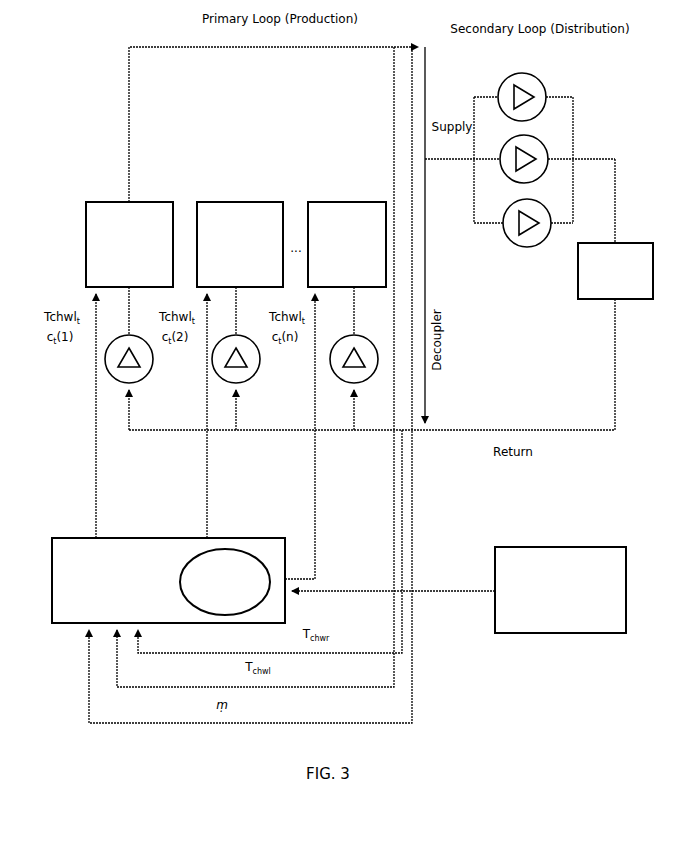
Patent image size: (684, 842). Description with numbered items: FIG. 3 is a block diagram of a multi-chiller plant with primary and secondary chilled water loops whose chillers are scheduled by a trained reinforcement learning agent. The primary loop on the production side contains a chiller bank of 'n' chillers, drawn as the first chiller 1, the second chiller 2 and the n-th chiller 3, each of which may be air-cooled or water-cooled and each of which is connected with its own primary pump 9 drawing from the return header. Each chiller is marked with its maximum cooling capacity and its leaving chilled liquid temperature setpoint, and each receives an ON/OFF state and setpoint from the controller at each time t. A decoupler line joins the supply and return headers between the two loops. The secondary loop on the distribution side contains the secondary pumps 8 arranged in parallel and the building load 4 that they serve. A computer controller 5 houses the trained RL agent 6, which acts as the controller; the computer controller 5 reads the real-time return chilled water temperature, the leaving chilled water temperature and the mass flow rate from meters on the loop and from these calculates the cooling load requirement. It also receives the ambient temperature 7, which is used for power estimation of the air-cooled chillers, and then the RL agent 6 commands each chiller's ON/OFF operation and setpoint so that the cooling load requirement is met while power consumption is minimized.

The chiller 1 is at (129, 244).
The chiller 2 is at (240, 244).
The chiller n 3 is at (347, 244).
The building load 4 is at (615, 271).
The computer controller 5 is at (168, 580).
The RL agent 6 is at (225, 582).
The ambient temperature 7 is at (560, 590).
The secondary loop pumps 8 is at (524, 160).
The primary loop pumps 9 is at (241, 359).